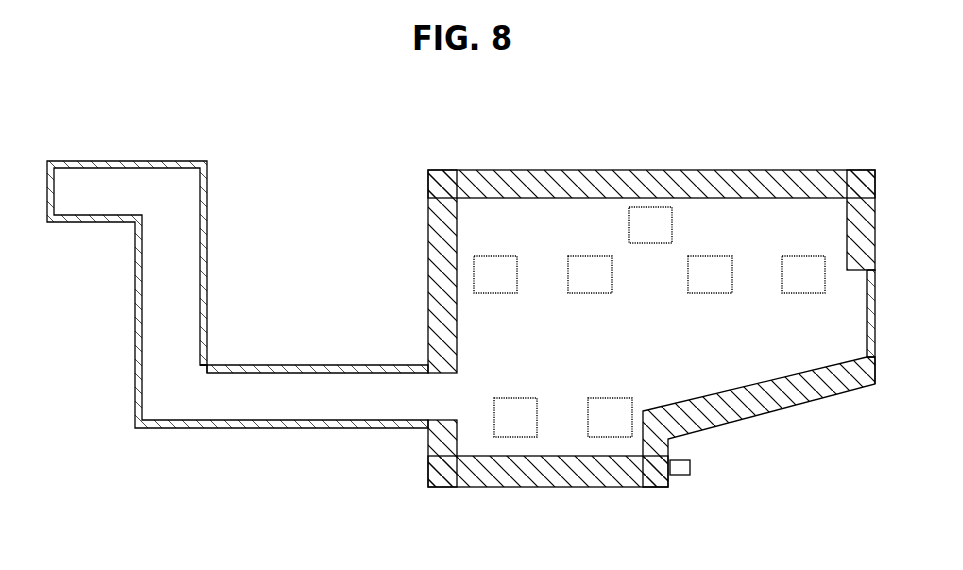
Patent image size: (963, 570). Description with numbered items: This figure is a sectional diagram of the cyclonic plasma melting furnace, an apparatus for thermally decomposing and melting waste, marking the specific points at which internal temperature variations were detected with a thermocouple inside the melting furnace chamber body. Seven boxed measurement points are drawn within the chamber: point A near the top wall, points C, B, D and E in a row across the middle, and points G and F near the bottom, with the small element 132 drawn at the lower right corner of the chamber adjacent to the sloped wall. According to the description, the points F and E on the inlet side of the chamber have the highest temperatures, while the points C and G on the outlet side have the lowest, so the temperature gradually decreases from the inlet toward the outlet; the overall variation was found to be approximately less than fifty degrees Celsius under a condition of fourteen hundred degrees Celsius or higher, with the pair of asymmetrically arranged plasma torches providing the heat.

The sensor 132 is at (690, 473).
The thermocouple measurement point A is at (650, 225).
The thermocouple measurement point B is at (590, 274).
The thermocouple measurement point C is at (495, 274).
The thermocouple measurement point D is at (710, 274).
The thermocouple measurement point E is at (803, 274).
The thermocouple measurement point F is at (610, 417).
The thermocouple measurement point G is at (515, 417).